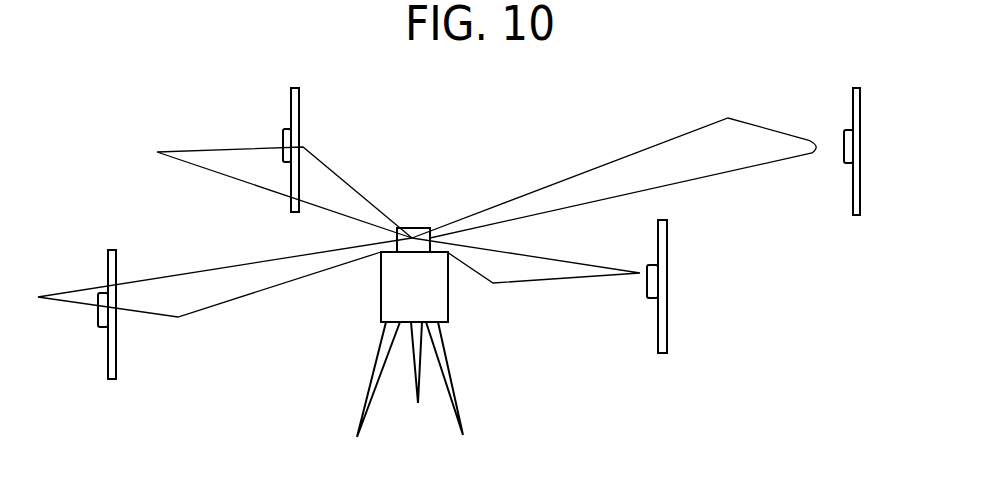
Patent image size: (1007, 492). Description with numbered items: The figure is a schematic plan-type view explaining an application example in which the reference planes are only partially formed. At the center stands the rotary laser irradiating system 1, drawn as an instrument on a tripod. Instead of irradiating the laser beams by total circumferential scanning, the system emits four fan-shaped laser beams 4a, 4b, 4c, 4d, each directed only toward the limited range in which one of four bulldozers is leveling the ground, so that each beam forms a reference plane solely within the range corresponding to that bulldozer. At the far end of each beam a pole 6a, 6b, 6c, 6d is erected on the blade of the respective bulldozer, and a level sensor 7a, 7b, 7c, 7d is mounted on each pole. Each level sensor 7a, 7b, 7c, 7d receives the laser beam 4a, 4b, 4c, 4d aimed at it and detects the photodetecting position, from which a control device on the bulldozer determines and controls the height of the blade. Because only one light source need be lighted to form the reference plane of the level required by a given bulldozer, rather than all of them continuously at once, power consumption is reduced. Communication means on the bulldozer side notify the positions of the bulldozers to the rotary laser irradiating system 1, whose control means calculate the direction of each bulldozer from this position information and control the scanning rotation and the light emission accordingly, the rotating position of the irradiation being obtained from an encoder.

The rotary laser irradiating system 1 is at (449, 305).
The laser beam 4a is at (565, 181).
The laser beam 4b is at (362, 196).
The laser beam 4c is at (268, 288).
The laser beam 4d is at (552, 260).
The pole 6a is at (852, 112).
The pole 6b is at (300, 113).
The pole 6c is at (117, 348).
The pole 6d is at (667, 332).
The level sensor 7a is at (845, 163).
The level sensor 7b is at (283, 130).
The level sensor 7c is at (98, 327).
The level sensor 7d is at (648, 296).